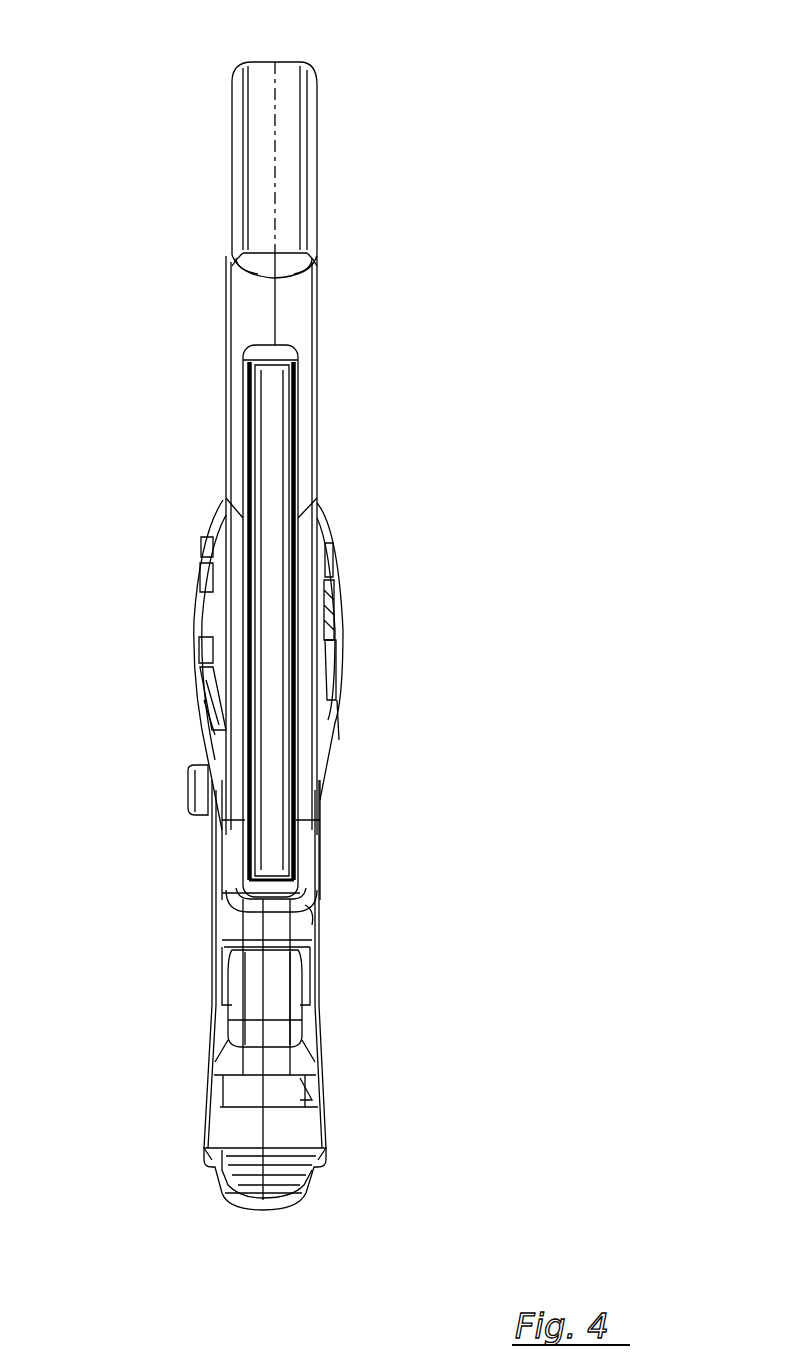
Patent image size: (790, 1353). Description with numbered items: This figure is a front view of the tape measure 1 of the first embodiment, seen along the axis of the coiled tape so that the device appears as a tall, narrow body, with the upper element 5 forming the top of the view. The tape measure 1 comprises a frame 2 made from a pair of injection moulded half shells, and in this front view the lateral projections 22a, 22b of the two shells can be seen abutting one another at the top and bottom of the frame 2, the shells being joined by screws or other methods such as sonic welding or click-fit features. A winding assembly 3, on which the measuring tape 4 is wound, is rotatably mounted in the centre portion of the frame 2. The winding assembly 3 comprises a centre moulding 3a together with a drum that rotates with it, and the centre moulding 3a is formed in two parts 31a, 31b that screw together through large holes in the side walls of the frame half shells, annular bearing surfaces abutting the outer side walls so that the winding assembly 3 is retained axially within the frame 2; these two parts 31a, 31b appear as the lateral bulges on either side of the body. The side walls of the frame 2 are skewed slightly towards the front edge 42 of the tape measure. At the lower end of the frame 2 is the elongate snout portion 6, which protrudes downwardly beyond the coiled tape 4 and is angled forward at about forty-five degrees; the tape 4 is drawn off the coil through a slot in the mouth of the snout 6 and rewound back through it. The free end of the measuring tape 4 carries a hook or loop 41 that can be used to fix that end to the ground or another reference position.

The tape measure 1 is at (528, 104).
The frame 2 is at (343, 317).
The winding assembly 3 is at (343, 560).
The centre moulding 3a is at (338, 587).
The measuring tape 4 is at (294, 413).
The cap 5 is at (292, 118).
The snout portion 6 is at (302, 1132).
The lateral projection 22a is at (247, 265).
The lateral projection 22b is at (292, 268).
The centre moulding part 31a is at (197, 683).
The centre moulding part 31b is at (332, 700).
The hook or loop 41 is at (300, 1190).
The front edge 42 is at (272, 631).